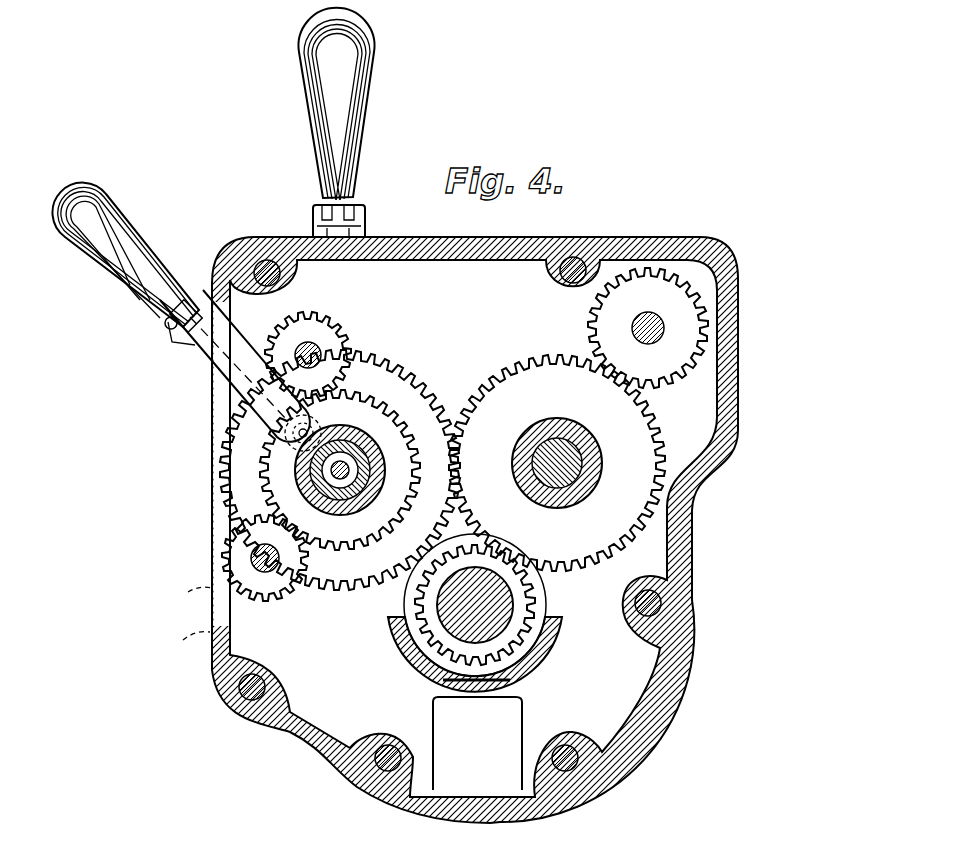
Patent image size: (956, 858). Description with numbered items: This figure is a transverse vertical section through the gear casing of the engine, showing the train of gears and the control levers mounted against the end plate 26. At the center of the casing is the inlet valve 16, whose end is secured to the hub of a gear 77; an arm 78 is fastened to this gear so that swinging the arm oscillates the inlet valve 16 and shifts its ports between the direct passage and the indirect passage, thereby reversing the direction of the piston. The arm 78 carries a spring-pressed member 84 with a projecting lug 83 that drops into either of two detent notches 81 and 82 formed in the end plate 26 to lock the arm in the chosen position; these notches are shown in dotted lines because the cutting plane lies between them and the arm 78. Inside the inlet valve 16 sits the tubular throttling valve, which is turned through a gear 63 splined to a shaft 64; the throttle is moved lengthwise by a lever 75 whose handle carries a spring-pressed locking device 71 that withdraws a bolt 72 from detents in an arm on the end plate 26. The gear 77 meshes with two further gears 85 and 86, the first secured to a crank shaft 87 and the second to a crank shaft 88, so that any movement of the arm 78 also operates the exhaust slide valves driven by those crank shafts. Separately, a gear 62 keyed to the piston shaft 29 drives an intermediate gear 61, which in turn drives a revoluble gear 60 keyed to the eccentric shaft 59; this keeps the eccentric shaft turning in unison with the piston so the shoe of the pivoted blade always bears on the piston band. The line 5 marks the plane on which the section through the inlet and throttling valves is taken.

The lever assembly 5 is at (84, 198).
The inlet valve 16 is at (296, 468).
The end plate 26 is at (493, 240).
The piston shaft 29 is at (444, 598).
The shaft 59 is at (665, 333).
The revoluble gear 60 is at (690, 326).
The intermediate gear 61 is at (640, 470).
The gear 62 is at (515, 591).
The gear 63 is at (410, 406).
The shaft 64 is at (385, 455).
The spring-pressed locking device 71 is at (369, 105).
The bolt 72 is at (341, 236).
The lever 75 is at (314, 218).
The gear 77 is at (366, 418).
The arm 78 is at (226, 365).
The detent notch 81 is at (190, 340).
The detent notch 82 is at (188, 624).
The projecting lug 83 is at (179, 300).
The spring-pressed member 84 is at (130, 242).
The gear 85 is at (318, 330).
The gear 86 is at (279, 592).
The crank shaft 87 is at (300, 365).
The crank shaft 88 is at (250, 558).